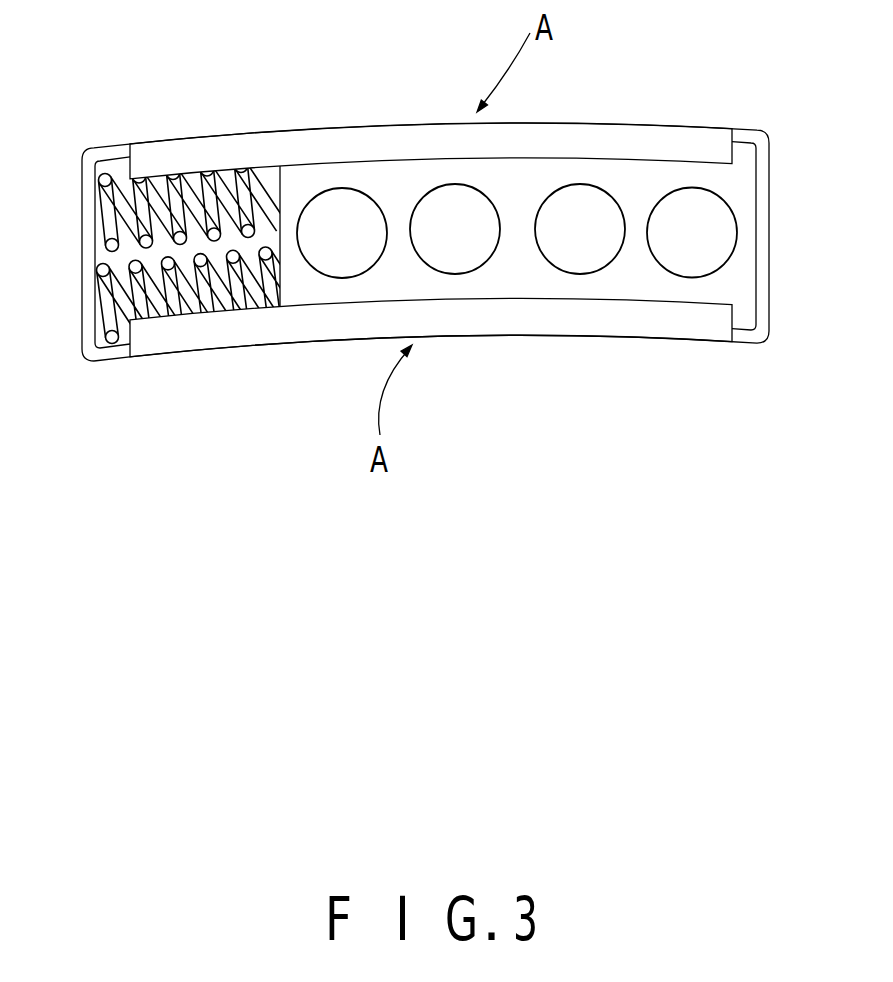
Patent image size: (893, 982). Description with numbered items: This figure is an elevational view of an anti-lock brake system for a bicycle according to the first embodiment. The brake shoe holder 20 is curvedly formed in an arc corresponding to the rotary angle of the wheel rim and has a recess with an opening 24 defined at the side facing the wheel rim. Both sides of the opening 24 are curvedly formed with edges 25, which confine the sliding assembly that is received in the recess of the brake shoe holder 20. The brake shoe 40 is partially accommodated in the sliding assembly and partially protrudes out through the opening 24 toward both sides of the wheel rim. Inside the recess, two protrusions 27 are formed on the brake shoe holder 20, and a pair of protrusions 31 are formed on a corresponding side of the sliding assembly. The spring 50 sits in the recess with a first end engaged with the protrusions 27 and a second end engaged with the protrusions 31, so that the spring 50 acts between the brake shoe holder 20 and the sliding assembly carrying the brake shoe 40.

The brake shoe holder 20 is at (755, 337).
The opening 24 is at (107, 360).
The edges 25 is at (497, 327).
The protrusions 27 is at (100, 218).
The protrusions 31 is at (270, 182).
The brake shoe 40 is at (573, 285).
The spring 50 is at (242, 285).